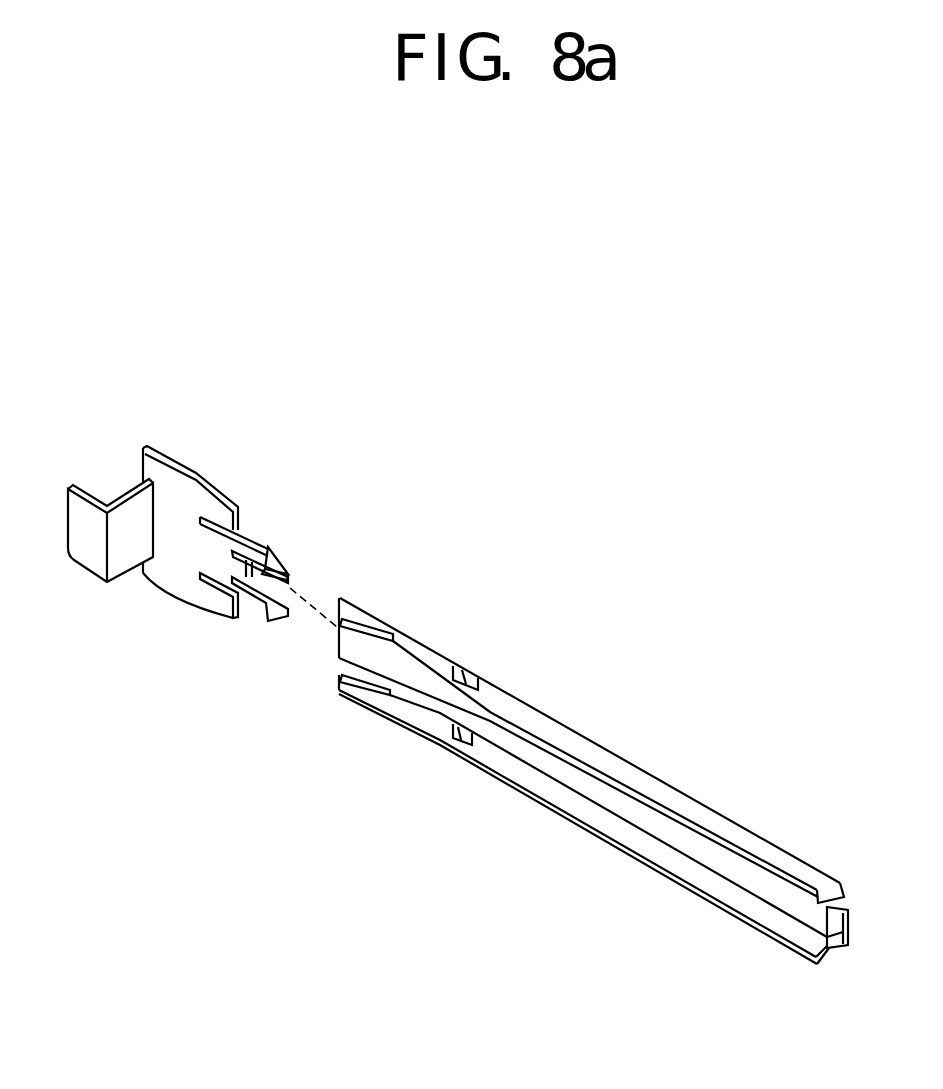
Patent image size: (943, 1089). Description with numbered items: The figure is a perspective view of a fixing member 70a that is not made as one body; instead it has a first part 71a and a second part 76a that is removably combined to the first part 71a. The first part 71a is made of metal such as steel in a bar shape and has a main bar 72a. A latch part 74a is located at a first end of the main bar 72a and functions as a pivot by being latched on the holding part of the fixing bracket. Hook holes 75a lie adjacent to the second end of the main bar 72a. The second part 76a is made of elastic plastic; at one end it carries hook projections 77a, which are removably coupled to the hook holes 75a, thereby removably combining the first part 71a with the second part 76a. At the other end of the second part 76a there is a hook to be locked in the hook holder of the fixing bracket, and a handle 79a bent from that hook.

The fixing member 70a is at (335, 828).
The first part 71a is at (407, 767).
The main bar 72a is at (682, 800).
The latch part 74a is at (830, 937).
The hook holes 75a is at (463, 663).
The second part 76a is at (162, 618).
The hook projections 77a is at (280, 557).
The handle 79a is at (88, 557).